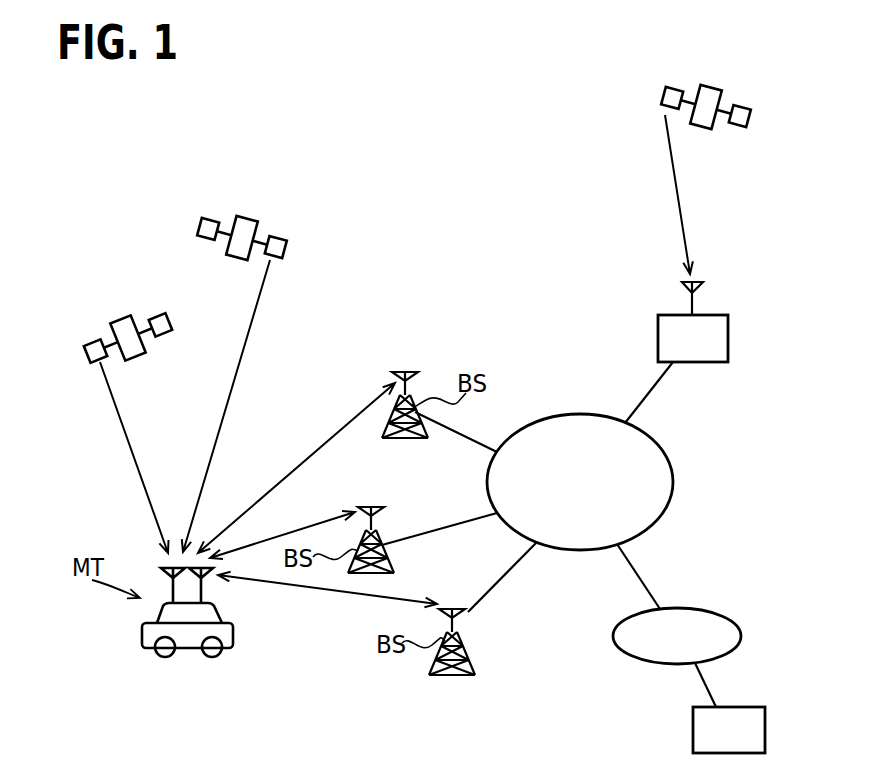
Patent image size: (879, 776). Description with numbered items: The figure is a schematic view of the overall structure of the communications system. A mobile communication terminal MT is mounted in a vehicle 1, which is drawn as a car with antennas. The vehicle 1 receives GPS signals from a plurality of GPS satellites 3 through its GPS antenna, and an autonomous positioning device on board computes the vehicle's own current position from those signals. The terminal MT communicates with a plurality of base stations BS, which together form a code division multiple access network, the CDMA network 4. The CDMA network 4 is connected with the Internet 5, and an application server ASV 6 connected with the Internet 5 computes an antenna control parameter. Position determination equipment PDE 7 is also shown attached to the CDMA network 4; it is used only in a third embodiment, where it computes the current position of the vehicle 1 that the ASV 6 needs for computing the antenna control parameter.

The vehicle 1 is at (142, 640).
The GPS satellites 3 is at (122, 318).
The CDMA network 4 is at (568, 415).
The Internet 5 is at (696, 608).
The application server (ASV) 6 is at (693, 726).
The position determination equipment (PDE) 7 is at (658, 333).